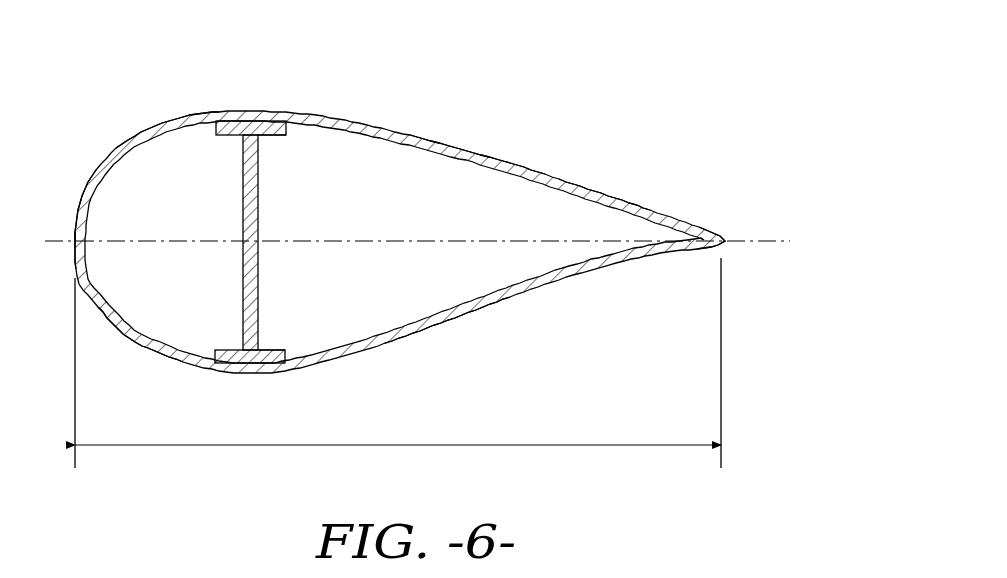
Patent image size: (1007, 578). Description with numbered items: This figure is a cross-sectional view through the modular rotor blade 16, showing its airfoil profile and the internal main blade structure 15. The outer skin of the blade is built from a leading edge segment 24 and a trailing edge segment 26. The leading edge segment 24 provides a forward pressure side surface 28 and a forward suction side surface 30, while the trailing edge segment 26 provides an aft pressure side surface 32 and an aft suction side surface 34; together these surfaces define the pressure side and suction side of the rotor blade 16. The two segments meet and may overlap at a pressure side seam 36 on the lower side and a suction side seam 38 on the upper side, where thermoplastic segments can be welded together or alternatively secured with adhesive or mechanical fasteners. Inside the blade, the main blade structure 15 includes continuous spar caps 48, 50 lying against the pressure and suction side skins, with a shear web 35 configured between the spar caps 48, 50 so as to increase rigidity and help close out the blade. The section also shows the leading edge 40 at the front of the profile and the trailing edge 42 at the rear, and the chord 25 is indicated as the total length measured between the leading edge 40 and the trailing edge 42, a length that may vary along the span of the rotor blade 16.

The main blade structure 15 is at (255, 249).
The rotor blade 16 is at (400, 194).
The leading edge segment 24 is at (97, 177).
The chord 25 is at (508, 446).
The trailing edge segment 26 is at (573, 193).
The forward pressure side surface 28 is at (150, 350).
The forward suction side surface 30 is at (152, 135).
The aft pressure side surface 32 is at (460, 313).
The aft suction side surface 34 is at (452, 143).
The shear web 35 is at (243, 214).
The pressure side seam 36 is at (240, 372).
The suction side seam 38 is at (267, 116).
The leading edge 40 is at (75, 240).
The trailing edge 42 is at (727, 241).
The spar cap 48 is at (268, 350).
The spar cap 50 is at (264, 137).